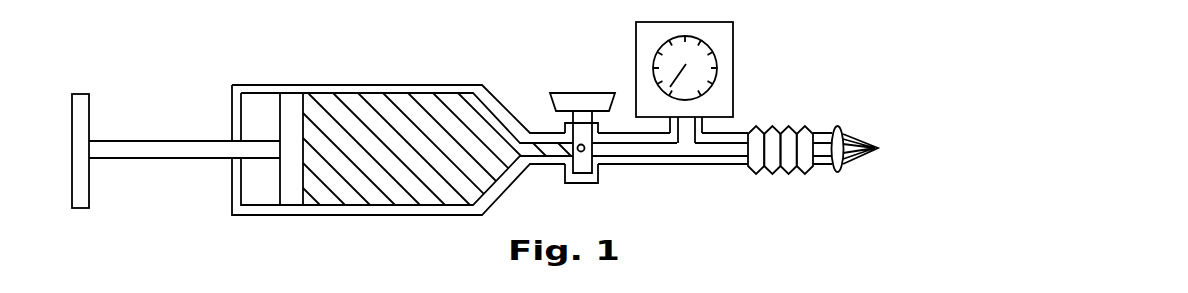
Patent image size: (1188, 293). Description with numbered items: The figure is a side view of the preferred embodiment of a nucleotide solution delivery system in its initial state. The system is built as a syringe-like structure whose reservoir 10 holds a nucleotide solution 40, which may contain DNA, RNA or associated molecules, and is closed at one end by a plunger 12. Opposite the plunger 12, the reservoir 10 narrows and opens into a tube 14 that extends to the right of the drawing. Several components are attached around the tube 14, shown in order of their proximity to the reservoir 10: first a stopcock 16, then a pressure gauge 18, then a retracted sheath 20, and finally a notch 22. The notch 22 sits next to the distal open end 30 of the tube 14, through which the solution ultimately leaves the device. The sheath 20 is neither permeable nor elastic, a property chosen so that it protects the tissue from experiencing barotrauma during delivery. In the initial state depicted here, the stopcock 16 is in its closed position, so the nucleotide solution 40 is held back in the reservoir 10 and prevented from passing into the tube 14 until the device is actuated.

The reservoir 10 is at (327, 85).
The plunger 12 is at (145, 141).
The tube 14 is at (645, 164).
The stopcock 16 is at (567, 98).
The pressure gauge 18 is at (710, 108).
The retracted sheath 20 is at (771, 127).
The notch 22 is at (833, 127).
The distal open end 30 is at (878, 147).
The nucleotide solution 40 is at (415, 118).